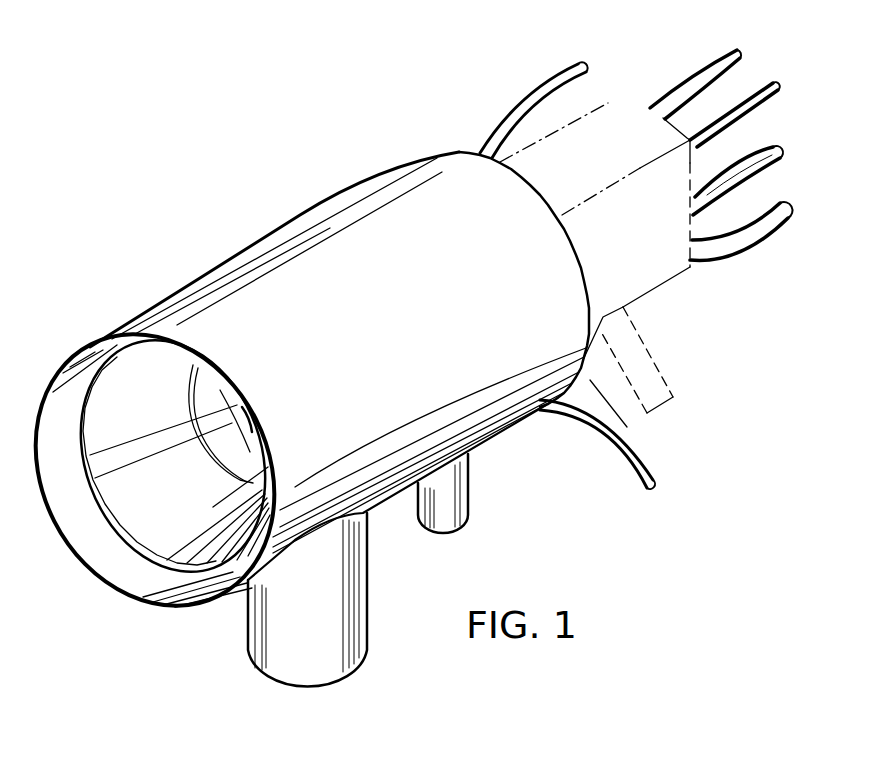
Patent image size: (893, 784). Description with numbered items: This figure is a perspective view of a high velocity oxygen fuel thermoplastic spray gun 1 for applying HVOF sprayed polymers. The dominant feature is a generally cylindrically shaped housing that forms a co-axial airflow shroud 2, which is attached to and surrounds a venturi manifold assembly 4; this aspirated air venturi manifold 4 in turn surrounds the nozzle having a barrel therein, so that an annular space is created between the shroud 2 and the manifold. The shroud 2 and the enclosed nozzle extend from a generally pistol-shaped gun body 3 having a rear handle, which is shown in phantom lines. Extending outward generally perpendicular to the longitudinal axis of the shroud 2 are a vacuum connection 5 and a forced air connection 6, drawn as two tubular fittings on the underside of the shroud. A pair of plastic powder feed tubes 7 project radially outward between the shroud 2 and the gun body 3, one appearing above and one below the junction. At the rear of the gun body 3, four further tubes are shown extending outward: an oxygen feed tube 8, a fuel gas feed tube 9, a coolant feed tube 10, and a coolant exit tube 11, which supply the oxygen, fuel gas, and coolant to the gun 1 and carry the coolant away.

The spray gun 1 is at (305, 210).
The co-axial airflow shroud 2 is at (384, 208).
The gun body 3 is at (626, 107).
The venturi manifold assembly 4 is at (97, 376).
The vacuum connection 5 is at (362, 578).
The forced air connection 6 is at (461, 493).
The plastic powder feed tubes 7 is at (512, 110).
The oxygen feed tube 8 is at (722, 64).
The fuel gas feed tube 9 is at (760, 85).
The coolant feed tube 10 is at (740, 248).
The coolant exit tube 11 is at (750, 158).